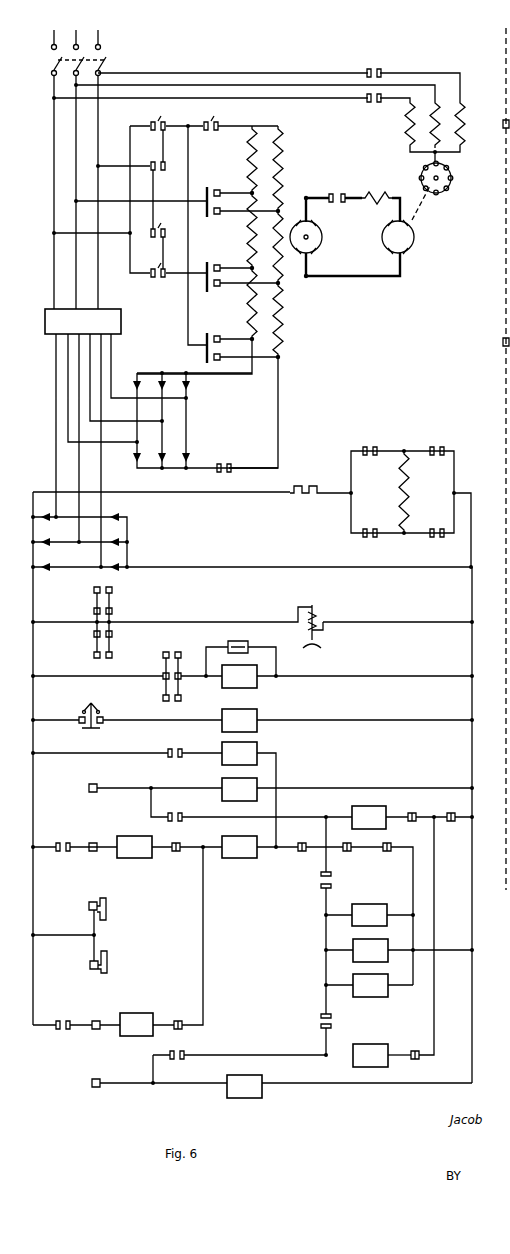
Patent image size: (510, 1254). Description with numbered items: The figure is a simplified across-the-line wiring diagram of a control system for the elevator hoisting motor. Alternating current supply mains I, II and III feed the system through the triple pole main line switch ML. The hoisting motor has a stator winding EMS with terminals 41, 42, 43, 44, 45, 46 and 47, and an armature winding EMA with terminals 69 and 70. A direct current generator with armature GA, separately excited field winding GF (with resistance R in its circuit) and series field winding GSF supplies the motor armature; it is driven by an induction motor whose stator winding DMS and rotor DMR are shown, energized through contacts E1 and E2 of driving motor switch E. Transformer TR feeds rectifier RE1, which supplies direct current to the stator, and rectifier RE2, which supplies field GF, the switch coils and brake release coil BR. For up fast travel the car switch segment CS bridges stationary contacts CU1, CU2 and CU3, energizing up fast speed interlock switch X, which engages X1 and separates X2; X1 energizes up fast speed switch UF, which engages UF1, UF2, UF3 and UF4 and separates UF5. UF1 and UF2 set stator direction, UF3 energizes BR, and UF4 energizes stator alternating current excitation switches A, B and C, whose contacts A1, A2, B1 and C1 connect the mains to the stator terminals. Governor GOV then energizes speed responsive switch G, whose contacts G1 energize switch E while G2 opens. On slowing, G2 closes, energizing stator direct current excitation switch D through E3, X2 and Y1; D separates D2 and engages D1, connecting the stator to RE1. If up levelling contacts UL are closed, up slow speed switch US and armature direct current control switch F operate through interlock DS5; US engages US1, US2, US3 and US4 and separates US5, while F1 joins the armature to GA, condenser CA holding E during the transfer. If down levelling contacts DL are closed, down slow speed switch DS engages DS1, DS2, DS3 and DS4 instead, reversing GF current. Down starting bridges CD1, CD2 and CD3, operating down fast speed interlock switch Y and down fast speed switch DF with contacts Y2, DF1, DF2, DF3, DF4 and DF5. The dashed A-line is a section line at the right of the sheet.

The alternating current supply main I is at (56, 161).
The alternating current supply main II is at (76, 161).
The alternating current supply main III is at (97, 161).
The main line switch ML is at (107, 61).
The contacts of driving motor switch E E1 is at (375, 69).
The contacts of driving motor switch E E2 is at (378, 103).
The driving motor stator winding DMS is at (405, 136).
The driving motor rotor DMR is at (452, 178).
The contacts of up fast speed switch UF UF1 is at (161, 117).
The contacts of down fast speed switch DF DF1 is at (156, 168).
The contacts of up fast speed switch UF UF2 is at (165, 223).
The contacts of down fast speed switch DF DF2 is at (149, 262).
The contacts of stator alternating current excitation switch A A1 is at (213, 117).
The contacts of stator alternating current excitation switch B B1 is at (213, 188).
The contacts of stator alternating current excitation switch C C1 is at (214, 263).
The contacts of stator alternating current excitation switch A A2 is at (214, 336).
The motor terminal 41 is at (247, 149).
The motor terminal 42 is at (260, 194).
The motor terminal 43 is at (286, 212).
The motor terminal 44 is at (259, 234).
The motor terminal 45 is at (285, 251).
The motor terminal 46 is at (259, 307).
The motor terminal 47 is at (285, 324).
The stator winding EMS is at (283, 148).
The armature winding terminal 69 is at (303, 190).
The armature winding terminal 70 is at (310, 286).
The contacts of armature direct current control switch F F1 is at (341, 191).
The generator series field winding GSF is at (377, 191).
The armature winding EMA is at (321, 238).
The generator armature GA is at (414, 238).
The transformer TR is at (83, 321).
The rectifier RE1 is at (188, 398).
The contacts of stator direct current excitation switch D D1 is at (224, 463).
The resistance R is at (311, 488).
The contacts of up slow speed switch US US1 is at (369, 449).
The contacts of down slow speed switch DS DS1 is at (436, 449).
The generator separately excited field winding GF is at (410, 488).
The contacts of down slow speed switch DS DS2 is at (369, 531).
The contacts of up slow speed switch US US2 is at (438, 525).
The rectifier RE2 is at (128, 518).
The contacts of up fast speed switch UF UF3 is at (111, 592).
The contacts of down fast speed switch DF DF3 is at (112, 613).
The contacts of up slow speed switch US US3 is at (93, 635).
The contacts of down slow speed switch DS DS3 is at (93, 656).
The brake release coil BR is at (314, 613).
The contacts of up slow speed switch US US4 is at (175, 658).
The condenser CA is at (248, 647).
The contacts of down slow speed switch DS DS4 is at (163, 673).
The driving motor switch E is at (239, 676).
The contacts of speed responsive switch G G1 is at (167, 700).
The governor GOV is at (78, 729).
The speed responsive switch G is at (239, 720).
The contacts of driving motor switch E E3 is at (173, 753).
The stator direct current excitation switch D is at (239, 753).
The stationary contact CU3 is at (98, 789).
The up fast speed interlock switch X is at (239, 789).
The contacts of up fast speed interlock switch X X1 is at (173, 817).
The up levelling contacts UL is at (61, 843).
The stationary contact CU2 is at (93, 843).
The up slow speed switch US is at (134, 847).
The interlock contacts of down slow speed switch DS DS5 is at (178, 843).
The armature direct current control switch F is at (239, 847).
The contacts of speed responsive switch G G2 is at (302, 843).
The up fast speed switch UF is at (369, 817).
The contacts of down fast speed switch DF DF4 is at (412, 812).
The contacts of stator direct current excitation switch D D2 is at (451, 812).
The contacts of up fast speed interlock switch X X2 is at (347, 851).
The contacts of down fast speed interlock switch Y Y1 is at (387, 851).
The contacts of up fast speed switch UF UF4 is at (320, 879).
The stator alternating current excitation switch A is at (369, 915).
The stator alternating current excitation switch B is at (370, 950).
The stator alternating current excitation switch C is at (370, 985).
The stationary contact CU1 is at (89, 909).
The car switch segment CS is at (130, 923).
The stationary contact CD1 is at (90, 975).
The down levelling contacts DL is at (61, 1021).
The stationary contact CD2 is at (92, 1033).
The down slow speed switch DS is at (136, 1024).
The interlock contacts of up slow speed switch US US5 is at (179, 1020).
The contacts of down fast speed switch DF DF5 is at (320, 1022).
The down fast speed switch DF is at (382, 1055).
The interlock contacts of up fast speed switch UF UF5 is at (415, 1051).
The contacts of down fast speed interlock switch Y Y2 is at (181, 1053).
The stationary contact CD3 is at (92, 1090).
The down fast speed interlock switch Y is at (244, 1086).
The section line A A-line is at (503, 449).